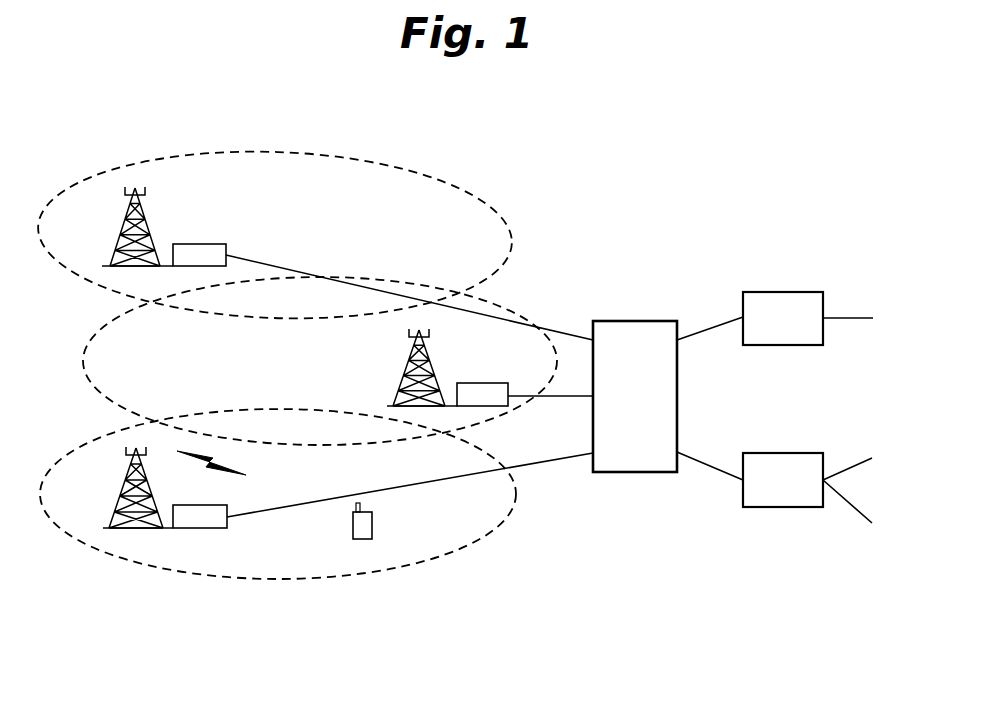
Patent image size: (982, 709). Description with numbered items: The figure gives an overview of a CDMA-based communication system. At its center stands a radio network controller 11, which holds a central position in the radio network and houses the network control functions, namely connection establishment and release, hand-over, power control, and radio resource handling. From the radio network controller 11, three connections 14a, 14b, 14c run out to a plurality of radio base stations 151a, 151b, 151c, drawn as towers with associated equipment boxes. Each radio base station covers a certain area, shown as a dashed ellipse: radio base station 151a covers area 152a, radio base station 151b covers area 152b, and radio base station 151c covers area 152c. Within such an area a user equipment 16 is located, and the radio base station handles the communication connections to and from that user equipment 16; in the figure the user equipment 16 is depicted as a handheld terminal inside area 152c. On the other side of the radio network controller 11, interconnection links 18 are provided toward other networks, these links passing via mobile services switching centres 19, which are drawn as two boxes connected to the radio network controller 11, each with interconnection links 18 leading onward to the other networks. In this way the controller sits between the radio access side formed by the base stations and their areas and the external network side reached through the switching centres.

The radio network controller 11 is at (633, 472).
The connection 14a is at (539, 328).
The connection 14b is at (565, 395).
The connection 14c is at (548, 460).
The user equipment 16 is at (372, 524).
The interconnection link 18 is at (842, 548).
The mobile services switching centre 19 is at (783, 545).
The radio base station 151a is at (124, 190).
The radio base station 151b is at (403, 372).
The radio base station 151c is at (123, 452).
The area 152a is at (407, 170).
The area 152b is at (510, 418).
The area 152c is at (442, 566).